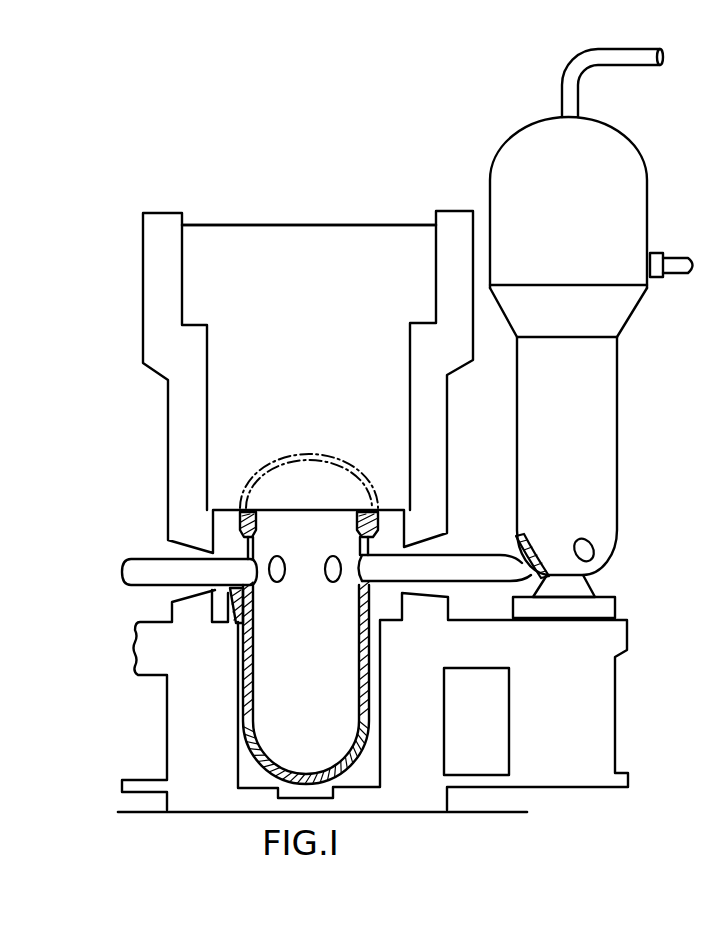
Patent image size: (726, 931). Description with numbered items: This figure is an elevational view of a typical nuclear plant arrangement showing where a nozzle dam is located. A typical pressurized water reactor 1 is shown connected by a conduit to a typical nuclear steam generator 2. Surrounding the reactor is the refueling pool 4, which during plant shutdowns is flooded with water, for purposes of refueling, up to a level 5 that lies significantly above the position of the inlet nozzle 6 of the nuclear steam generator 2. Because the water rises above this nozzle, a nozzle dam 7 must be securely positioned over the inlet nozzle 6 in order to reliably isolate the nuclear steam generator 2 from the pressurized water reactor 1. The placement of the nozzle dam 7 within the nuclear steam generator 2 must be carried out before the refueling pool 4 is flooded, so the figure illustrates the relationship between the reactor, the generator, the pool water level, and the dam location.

The pressurized water reactor 1 is at (238, 717).
The nuclear steam generator 2 is at (522, 420).
The refueling pool 4 is at (307, 309).
The water level 5 is at (323, 225).
The inlet nozzle 6 is at (535, 543).
The nozzle dam 7 is at (513, 543).